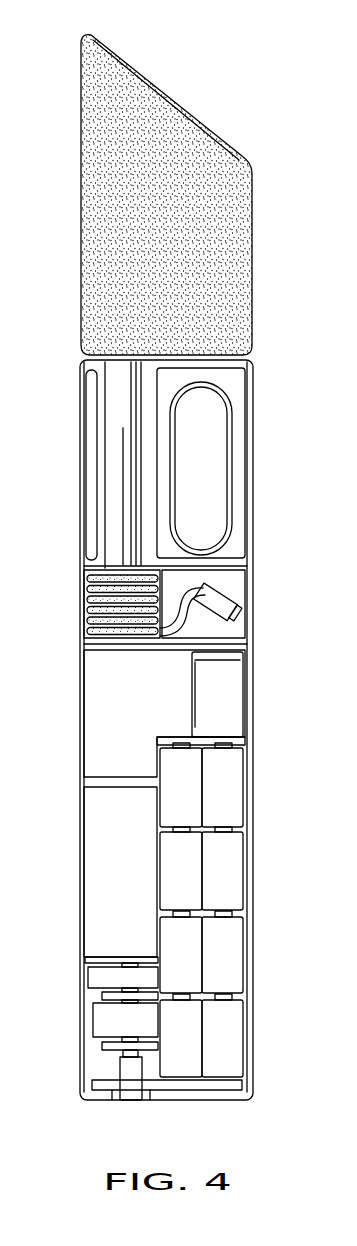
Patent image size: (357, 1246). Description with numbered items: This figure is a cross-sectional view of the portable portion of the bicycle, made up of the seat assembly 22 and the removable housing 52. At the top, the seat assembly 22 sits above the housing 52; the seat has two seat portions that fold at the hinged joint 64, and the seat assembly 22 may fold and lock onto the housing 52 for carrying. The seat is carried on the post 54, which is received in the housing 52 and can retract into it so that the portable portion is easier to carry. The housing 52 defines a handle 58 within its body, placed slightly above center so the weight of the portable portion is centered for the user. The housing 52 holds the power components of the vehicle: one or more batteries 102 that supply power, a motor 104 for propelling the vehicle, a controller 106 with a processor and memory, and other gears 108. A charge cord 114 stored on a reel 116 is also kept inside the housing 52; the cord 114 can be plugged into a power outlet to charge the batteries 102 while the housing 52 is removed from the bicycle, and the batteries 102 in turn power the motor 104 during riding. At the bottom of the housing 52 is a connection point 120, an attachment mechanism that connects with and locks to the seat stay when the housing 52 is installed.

The seat assembly 22 is at (254, 263).
The hinged joint 64 is at (120, 50).
The post 54 is at (112, 463).
The handle 58 is at (203, 428).
The reel 116 is at (82, 603).
The removable housing 52 is at (264, 596).
The charge cord 114 is at (190, 584).
The motor 104 is at (115, 880).
The controller 106 is at (222, 693).
The batteries 102 is at (190, 952).
The gears 108 is at (96, 1020).
The connection point 120 is at (132, 1090).